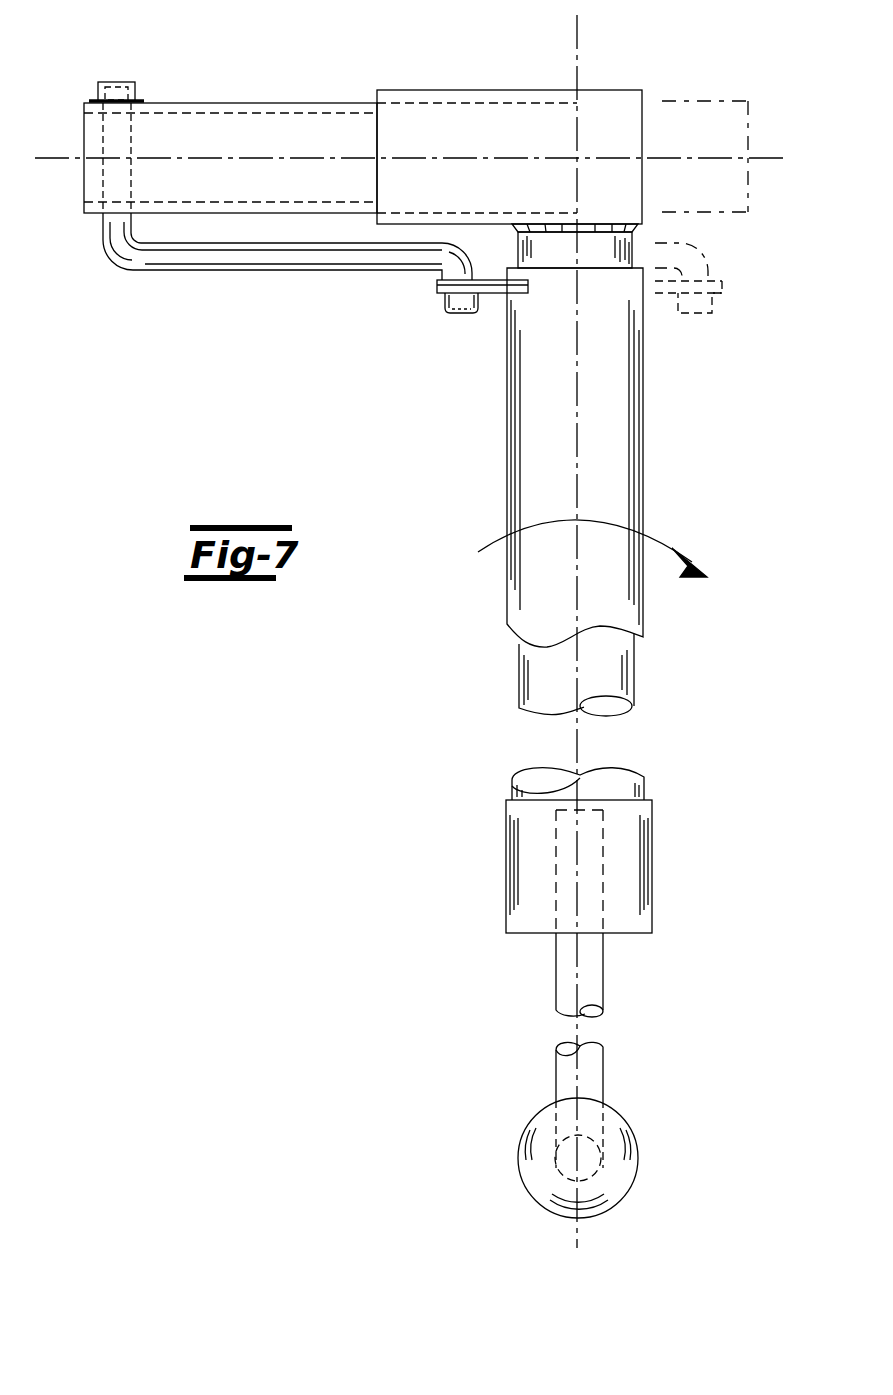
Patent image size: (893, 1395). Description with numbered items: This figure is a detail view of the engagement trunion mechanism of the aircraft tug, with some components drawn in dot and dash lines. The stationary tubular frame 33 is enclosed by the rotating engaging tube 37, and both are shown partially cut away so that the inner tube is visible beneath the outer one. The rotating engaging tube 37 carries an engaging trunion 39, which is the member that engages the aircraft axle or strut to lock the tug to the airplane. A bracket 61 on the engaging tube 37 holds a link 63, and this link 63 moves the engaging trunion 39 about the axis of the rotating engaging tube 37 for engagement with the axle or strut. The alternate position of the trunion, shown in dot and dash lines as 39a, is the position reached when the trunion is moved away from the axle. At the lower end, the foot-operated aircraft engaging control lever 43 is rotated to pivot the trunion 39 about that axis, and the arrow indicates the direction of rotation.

The engaging trunion 39 is at (257, 102).
The tube (phantom alternate position) 39a is at (730, 101).
The link 63 is at (200, 258).
The bracket 61 is at (440, 294).
The rotating engaging tube 37 is at (643, 437).
The tubular frame 33 is at (613, 677).
The aircraft engaging control lever 43 is at (640, 1153).